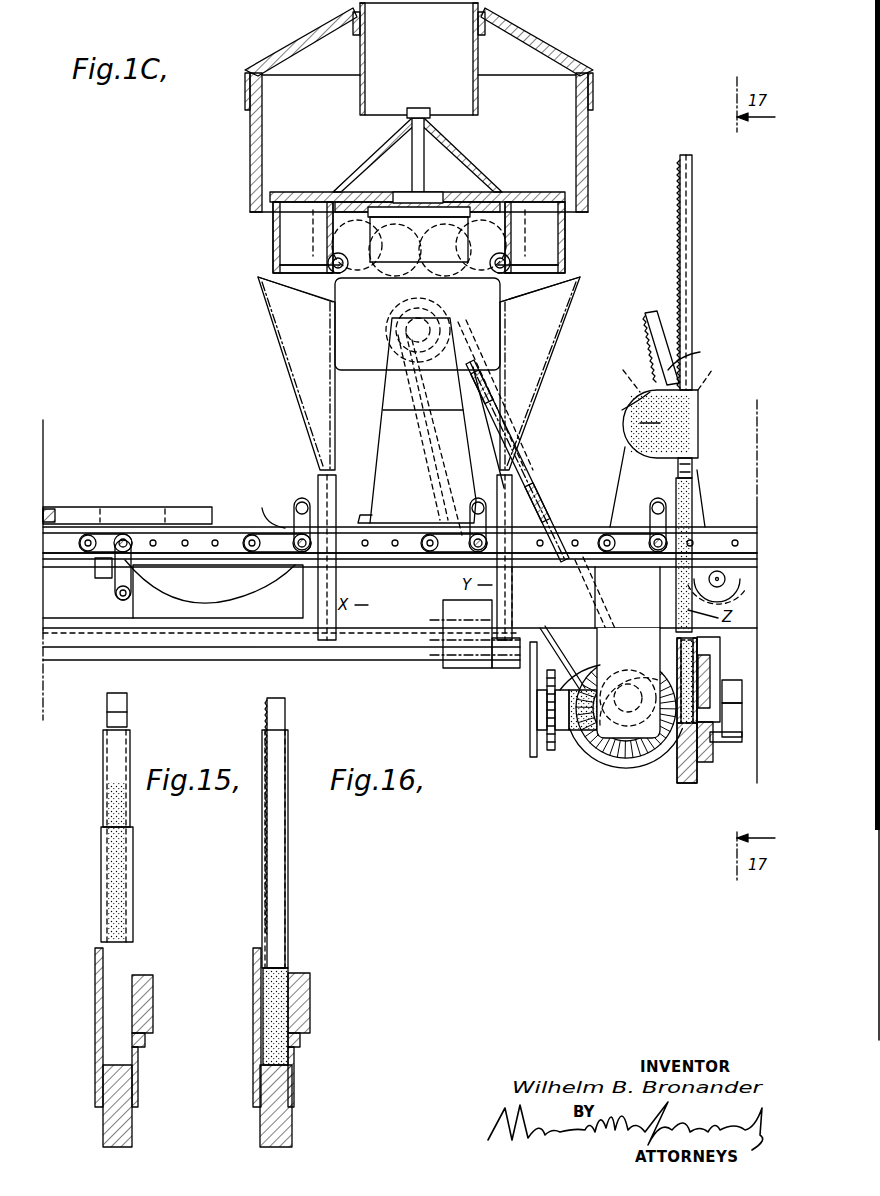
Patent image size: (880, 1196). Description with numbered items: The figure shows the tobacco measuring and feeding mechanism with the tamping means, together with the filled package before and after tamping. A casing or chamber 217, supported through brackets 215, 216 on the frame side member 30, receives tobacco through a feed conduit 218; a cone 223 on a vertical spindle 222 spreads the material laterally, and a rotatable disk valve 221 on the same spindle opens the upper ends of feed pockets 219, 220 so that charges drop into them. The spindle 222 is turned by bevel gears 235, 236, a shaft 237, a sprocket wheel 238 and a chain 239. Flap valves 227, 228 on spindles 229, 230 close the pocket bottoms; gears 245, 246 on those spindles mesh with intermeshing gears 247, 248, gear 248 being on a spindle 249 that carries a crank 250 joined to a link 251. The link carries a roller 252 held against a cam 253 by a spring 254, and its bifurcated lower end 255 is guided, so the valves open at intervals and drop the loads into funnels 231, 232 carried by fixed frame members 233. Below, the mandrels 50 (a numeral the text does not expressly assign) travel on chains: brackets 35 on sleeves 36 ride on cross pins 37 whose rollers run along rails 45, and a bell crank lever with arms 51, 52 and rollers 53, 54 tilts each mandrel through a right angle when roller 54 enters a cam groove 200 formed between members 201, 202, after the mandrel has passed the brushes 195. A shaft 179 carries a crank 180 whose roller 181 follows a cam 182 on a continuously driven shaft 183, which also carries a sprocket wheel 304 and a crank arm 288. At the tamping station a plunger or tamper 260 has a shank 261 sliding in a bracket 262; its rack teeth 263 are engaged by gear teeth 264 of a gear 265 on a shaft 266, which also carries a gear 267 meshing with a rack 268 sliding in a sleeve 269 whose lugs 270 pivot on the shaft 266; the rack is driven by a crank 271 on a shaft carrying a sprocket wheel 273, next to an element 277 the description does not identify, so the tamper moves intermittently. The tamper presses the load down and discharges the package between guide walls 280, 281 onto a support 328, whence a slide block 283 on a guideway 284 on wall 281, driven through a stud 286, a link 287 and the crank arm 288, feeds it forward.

In FIG. 1C, the casing or chamber 217 is at (585, 116).
In FIG. 1C, the feed conduit 218 is at (350, 8).
In FIG. 1C, the rotatable disk valve 221 is at (530, 192).
In FIG. 1C, the cone 223 is at (370, 165).
In FIG. 1C, the vertical spindle 222 is at (412, 165).
In FIG. 1C, the crank 250 is at (432, 192).
In FIG. 1C, the feed pocket 219 is at (275, 235).
In FIG. 1C, the feed pocket 220 is at (565, 216).
In FIG. 1C, the flap valve 227 is at (278, 258).
In FIG. 1C, the flap valve 228 is at (565, 250).
In FIG. 1C, the spindle 229 is at (340, 255).
In FIG. 1C, the spindle 230 is at (508, 256).
In FIG. 1C, the gear 248 is at (462, 238).
In FIG. 1C, the spindle 249 is at (458, 262).
In FIG. 1C, the gear 247 is at (404, 285).
In FIG. 1C, the gear 245 is at (310, 300).
In FIG. 1C, the gear 246 is at (540, 302).
In FIG. 1C, the funnel 231 is at (275, 352).
In FIG. 1C, the funnel 232 is at (552, 330).
In FIG. 1C, the fixed frame members 233 is at (355, 340).
In FIG. 1C, the shaft 237 is at (395, 328).
In FIG. 1C, the sprocket wheel 238 is at (392, 350).
In FIG. 1C, the bevel gear 235 is at (495, 401).
In FIG. 1C, the bevel gear 236 is at (426, 426).
In FIG. 1C, the bracket 216 is at (392, 392).
In FIG. 1C, the bracket 215 is at (388, 433).
In FIG. 1C, the chain 239 is at (431, 437).
In FIG. 1C, the shank 261 is at (693, 305).
In FIG. 1C, the rack teeth 263 is at (690, 287).
In FIG. 1C, the rack 268 is at (645, 342).
In FIG. 1C, the sleeve 269 is at (702, 352).
In FIG. 1C, the bracket 262 is at (698, 410).
In FIG. 1C, the gear teeth 264 is at (719, 372).
In FIG. 1C, the shaft 266 is at (616, 372).
In FIG. 1C, the gear 265 is at (622, 408).
In FIG. 1C, the gear 267 is at (640, 424).
In FIG. 1C, the lugs 270 is at (622, 450).
In FIG. 1C, the plunger or tamper 260 is at (692, 466).
In FIG. 15, the plunger or tamper 260 is at (107, 714).
In FIG. 16, the plunger or tamper 260 is at (268, 960).
In FIG. 1C, the tube 50 is at (332, 502).
In FIG. 15, the tube 50 is at (103, 768).
In FIG. 16, the tube 50 is at (290, 875).
In FIG. 1C, the ledge or rail 45 is at (45, 575).
In FIG. 1C, the brushes 195 is at (82, 507).
In FIG. 1C, the cross pins 37 is at (280, 552).
In FIG. 1C, the sleeves 36 is at (300, 552).
In FIG. 1C, the brackets or lugs 35 is at (305, 556).
In FIG. 1C, the roller 53 is at (302, 498).
In FIG. 1C, the arm 51 is at (273, 504).
In FIG. 1C, the arm 52 is at (262, 540).
In FIG. 1C, the roller 54 is at (262, 553).
In FIG. 1C, the cam track or groove 200 is at (172, 590).
In FIG. 1C, the member 201 is at (118, 580).
In FIG. 1C, the member 202 is at (135, 620).
In FIG. 1C, the side member 30 is at (400, 640).
In FIG. 1C, the shaft 179 is at (108, 652).
In FIG. 1C, the link 251 is at (588, 484).
In FIG. 1C, the pulley 277 is at (726, 580).
In FIG. 1C, the crank 271 is at (735, 568).
In FIG. 1C, the sprocket wheel 273 is at (742, 610).
In FIG. 1C, the crank 180 is at (505, 668).
In FIG. 1C, the roller 181 is at (532, 665).
In FIG. 1C, the cam 182 is at (530, 735).
In FIG. 1C, the shaft 183 is at (552, 752).
In FIG. 1C, the sprocket wheel 304 is at (547, 762).
In FIG. 1C, the cam 253 is at (615, 760).
In FIG. 1C, the bifurcated lower end 255 is at (648, 762).
In FIG. 1C, the roller 252 is at (564, 658).
In FIG. 1C, the spring 254 is at (578, 669).
In FIG. 1C, the guide wall 280 is at (685, 785).
In FIG. 15, the guide wall 280 is at (95, 1004).
In FIG. 16, the guide wall 280 is at (253, 1018).
In FIG. 1C, the slide block 283 is at (718, 642).
In FIG. 1C, the guideway 284 is at (712, 672).
In FIG. 15, the guideway 284 is at (135, 975).
In FIG. 16, the guideway 284 is at (300, 973).
In FIG. 1C, the stud 286 is at (735, 690).
In FIG. 1C, the link 287 is at (742, 710).
In FIG. 1C, the crank arm 288 is at (742, 742).
In FIG. 1C, the guide wall 281 is at (705, 752).
In FIG. 15, the guide wall 281 is at (145, 1002).
In FIG. 16, the guide wall 281 is at (305, 990).
In FIG. 15, the support 328 is at (103, 1132).
In FIG. 16, the support 328 is at (260, 1130).